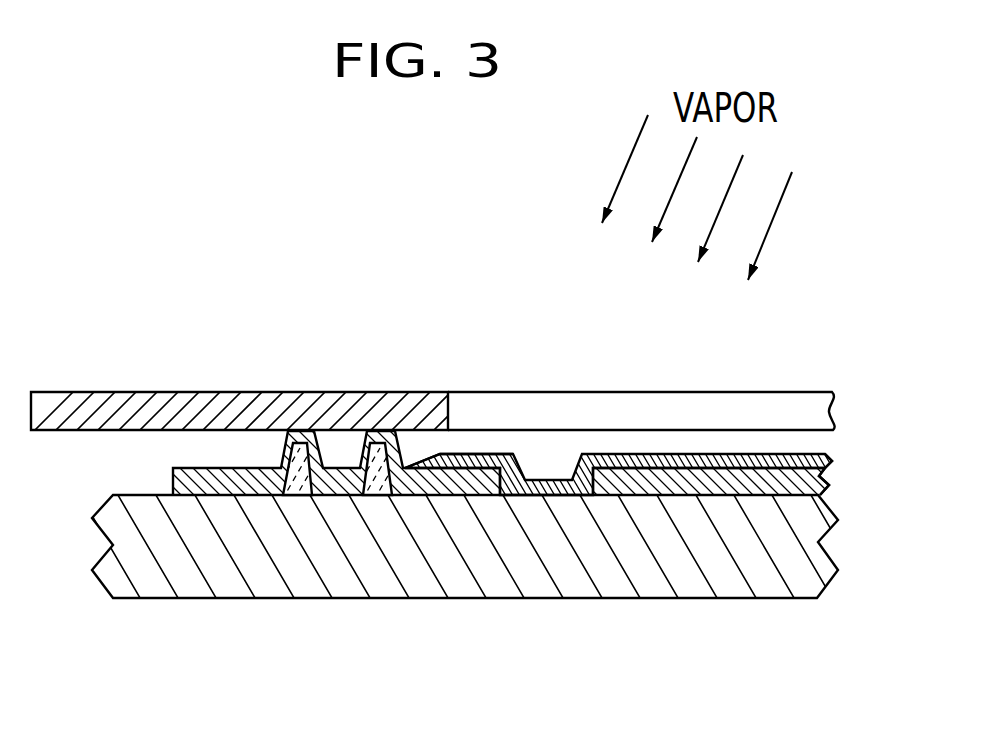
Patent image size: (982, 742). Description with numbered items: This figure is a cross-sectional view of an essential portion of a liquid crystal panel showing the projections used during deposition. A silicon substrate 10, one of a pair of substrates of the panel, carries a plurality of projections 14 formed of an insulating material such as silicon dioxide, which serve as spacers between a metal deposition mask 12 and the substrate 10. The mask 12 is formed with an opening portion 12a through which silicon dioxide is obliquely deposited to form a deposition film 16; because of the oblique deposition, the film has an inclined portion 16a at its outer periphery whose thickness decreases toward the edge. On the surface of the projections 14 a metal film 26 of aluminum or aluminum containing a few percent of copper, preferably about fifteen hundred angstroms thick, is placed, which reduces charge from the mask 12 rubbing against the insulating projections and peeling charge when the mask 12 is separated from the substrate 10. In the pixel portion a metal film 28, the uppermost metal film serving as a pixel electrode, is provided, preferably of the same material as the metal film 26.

The substrate 10 is at (602, 577).
The mask 12 is at (182, 407).
The opening portion 12a is at (557, 408).
The projections 14 is at (378, 495).
The deposition film 16 is at (727, 453).
The inclined portion 16a is at (423, 460).
The metal film 26 is at (174, 485).
The metal film 28 is at (822, 467).